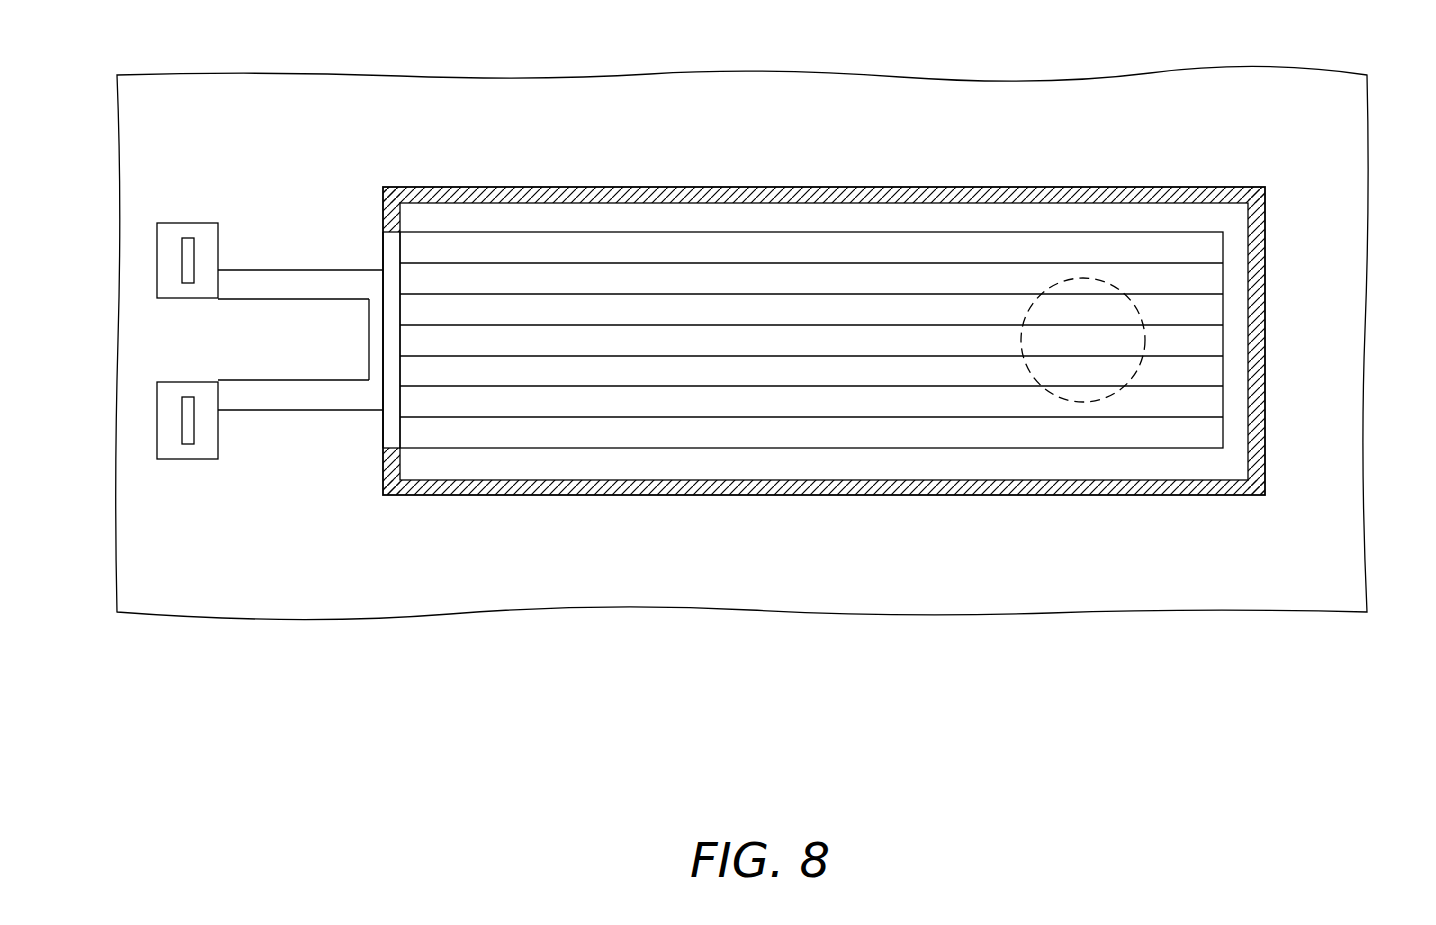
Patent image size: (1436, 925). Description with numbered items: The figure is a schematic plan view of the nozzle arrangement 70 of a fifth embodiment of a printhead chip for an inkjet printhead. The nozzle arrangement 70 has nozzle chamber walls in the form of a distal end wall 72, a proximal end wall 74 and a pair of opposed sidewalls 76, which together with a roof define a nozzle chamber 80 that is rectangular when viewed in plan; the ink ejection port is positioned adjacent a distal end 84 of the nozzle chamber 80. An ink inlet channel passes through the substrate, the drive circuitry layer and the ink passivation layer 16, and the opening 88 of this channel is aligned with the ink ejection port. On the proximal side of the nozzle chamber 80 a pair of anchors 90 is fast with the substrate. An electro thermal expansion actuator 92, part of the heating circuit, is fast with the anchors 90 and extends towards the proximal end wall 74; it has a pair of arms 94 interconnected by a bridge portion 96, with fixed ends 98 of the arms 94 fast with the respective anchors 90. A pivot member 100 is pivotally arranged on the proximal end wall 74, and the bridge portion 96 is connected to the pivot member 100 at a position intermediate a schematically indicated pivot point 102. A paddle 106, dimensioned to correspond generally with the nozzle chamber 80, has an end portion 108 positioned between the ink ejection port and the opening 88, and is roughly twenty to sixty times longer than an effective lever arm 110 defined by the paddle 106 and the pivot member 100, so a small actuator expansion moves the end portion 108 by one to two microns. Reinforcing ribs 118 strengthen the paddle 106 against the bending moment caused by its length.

The ink passivation layer 16 is at (267, 597).
The nozzle arrangement 70 is at (1018, 632).
The distal end wall 72 is at (1266, 259).
The proximal end wall 74 is at (382, 202).
The pair of opposed sidewalls 76 is at (735, 183).
The nozzle chamber 80 is at (803, 283).
The distal end 84 is at (1232, 227).
The opening 88 is at (1098, 378).
The pair of anchors 90 is at (150, 296).
The electro thermal expansion actuator 92 is at (255, 268).
The pair of arms 94 is at (287, 300).
The bridge portion 96 is at (368, 367).
The fixed ends 98 is at (232, 268).
The pivot member 100 is at (383, 247).
The pivot point 102 is at (403, 217).
The paddle 106 is at (628, 233).
The end portion 108 is at (1208, 232).
The effective lever arm 110 is at (377, 398).
The reinforcing ribs 118 is at (540, 325).